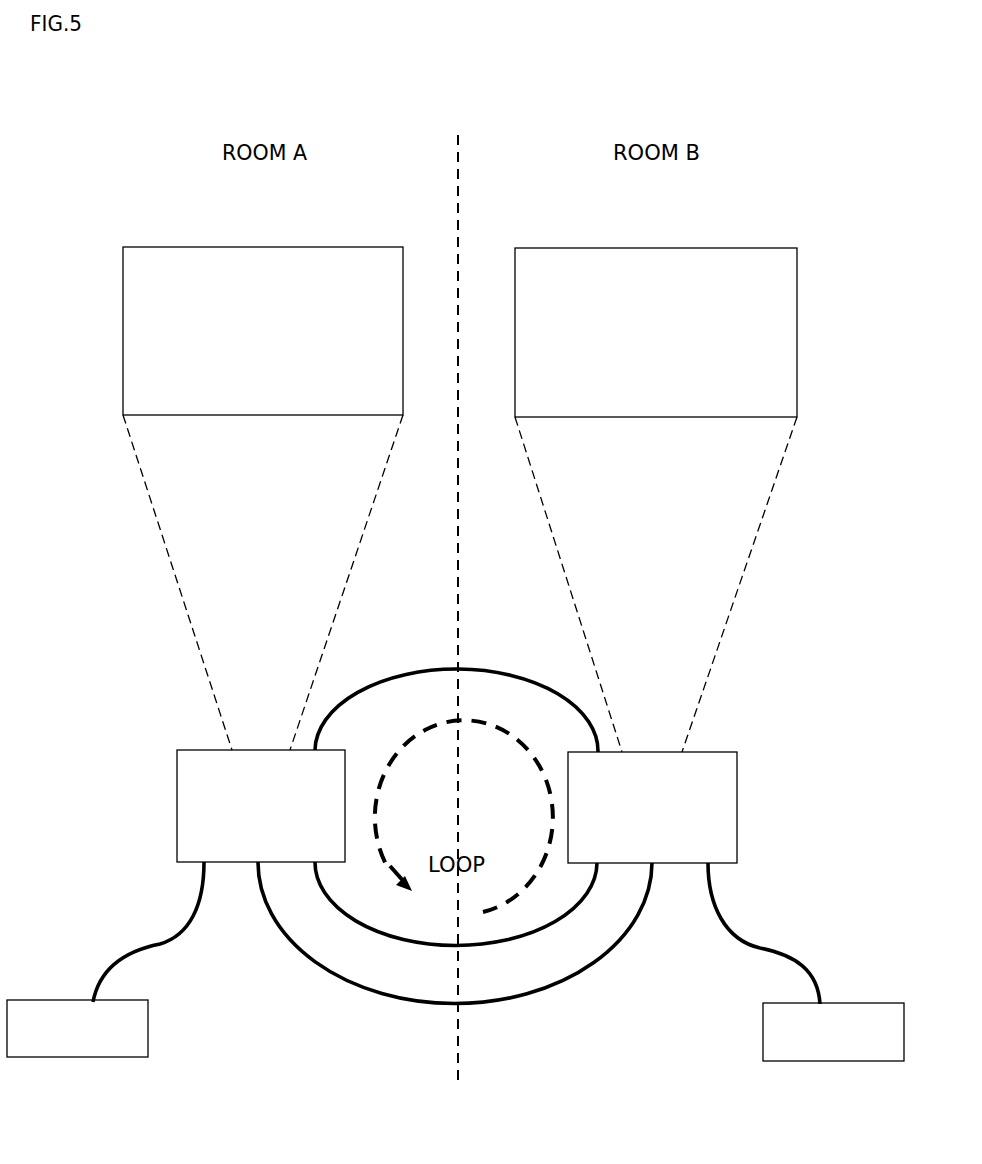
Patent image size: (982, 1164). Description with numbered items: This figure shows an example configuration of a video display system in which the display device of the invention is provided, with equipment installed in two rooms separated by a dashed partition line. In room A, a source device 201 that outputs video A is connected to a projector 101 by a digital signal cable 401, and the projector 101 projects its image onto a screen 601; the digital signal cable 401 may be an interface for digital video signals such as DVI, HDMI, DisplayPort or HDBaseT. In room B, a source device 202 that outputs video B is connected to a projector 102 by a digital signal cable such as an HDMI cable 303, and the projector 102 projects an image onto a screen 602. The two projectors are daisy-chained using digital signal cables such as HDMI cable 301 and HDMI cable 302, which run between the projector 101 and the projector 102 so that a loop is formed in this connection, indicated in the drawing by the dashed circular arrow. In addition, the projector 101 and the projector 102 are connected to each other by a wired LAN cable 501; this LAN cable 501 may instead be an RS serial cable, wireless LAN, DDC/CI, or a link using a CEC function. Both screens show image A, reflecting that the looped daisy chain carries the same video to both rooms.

The projector 101 is at (192, 750).
The projector 102 is at (708, 752).
The source device 201 is at (90, 1057).
The source device 202 is at (817, 1061).
The HDMI cable 301 is at (598, 893).
The HDMI cable 302 is at (408, 670).
The HDMI cable 303 is at (770, 948).
The digital signal cable 401 is at (190, 925).
The LAN cable 501 is at (512, 1003).
The screen 601 is at (272, 234).
The screen 602 is at (663, 236).